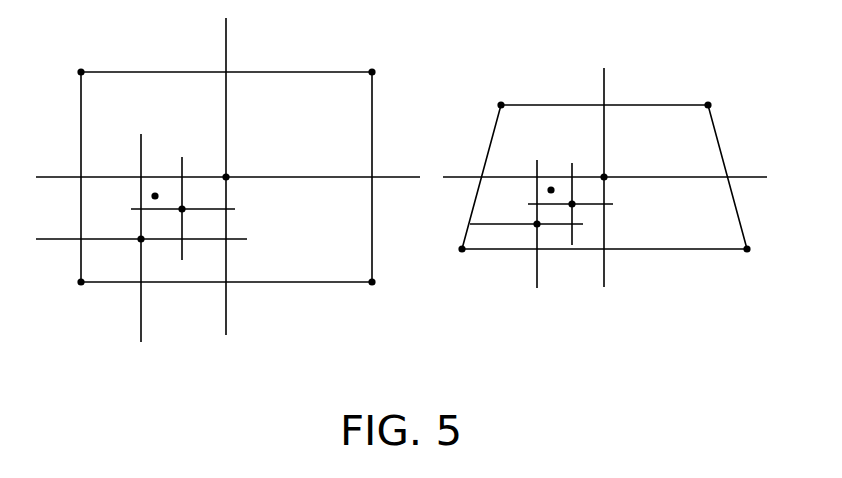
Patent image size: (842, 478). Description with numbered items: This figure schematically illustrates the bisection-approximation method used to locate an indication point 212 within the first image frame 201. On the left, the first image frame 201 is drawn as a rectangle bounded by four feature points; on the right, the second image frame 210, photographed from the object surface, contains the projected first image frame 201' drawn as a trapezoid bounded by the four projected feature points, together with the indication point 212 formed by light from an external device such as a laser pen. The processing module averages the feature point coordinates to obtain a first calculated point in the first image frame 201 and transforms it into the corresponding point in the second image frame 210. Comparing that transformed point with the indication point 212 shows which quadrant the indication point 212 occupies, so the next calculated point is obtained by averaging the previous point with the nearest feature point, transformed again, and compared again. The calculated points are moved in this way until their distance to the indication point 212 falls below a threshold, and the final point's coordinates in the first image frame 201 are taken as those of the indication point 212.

The first image frame 201 is at (227, 187).
The projected first image frame 201' is at (608, 192).
The second image frame 210 is at (608, 224).
The indication point 212 is at (152, 196).